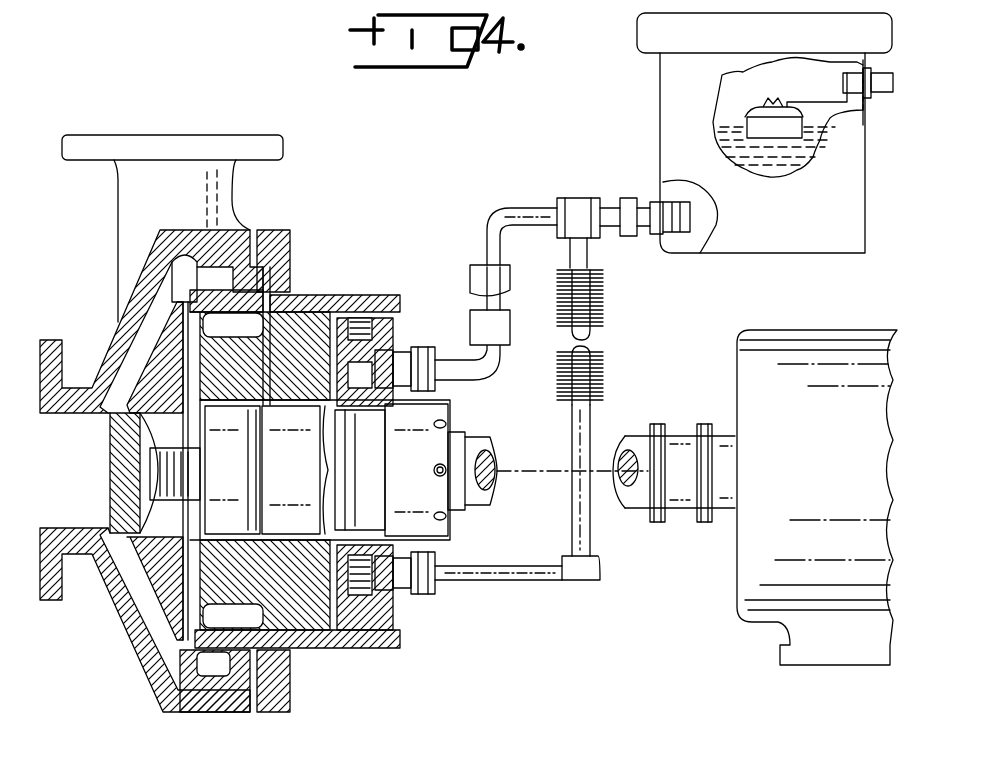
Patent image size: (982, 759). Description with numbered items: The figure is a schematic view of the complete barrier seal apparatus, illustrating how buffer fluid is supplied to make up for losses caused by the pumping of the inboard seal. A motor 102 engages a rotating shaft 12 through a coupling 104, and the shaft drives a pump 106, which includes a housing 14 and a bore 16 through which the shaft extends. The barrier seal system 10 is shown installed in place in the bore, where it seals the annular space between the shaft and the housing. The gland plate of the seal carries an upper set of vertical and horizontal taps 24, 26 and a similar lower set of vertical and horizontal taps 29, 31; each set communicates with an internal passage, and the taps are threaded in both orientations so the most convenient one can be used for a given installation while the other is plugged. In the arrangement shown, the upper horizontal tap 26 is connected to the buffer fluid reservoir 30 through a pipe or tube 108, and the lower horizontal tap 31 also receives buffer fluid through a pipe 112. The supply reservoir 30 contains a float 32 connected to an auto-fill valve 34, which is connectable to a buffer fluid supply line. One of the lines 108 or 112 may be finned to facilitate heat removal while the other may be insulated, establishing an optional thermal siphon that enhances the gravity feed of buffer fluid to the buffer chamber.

The barrier seal system 10 is at (462, 530).
The rotating shaft 12 is at (495, 440).
The housing 14 is at (180, 706).
The bore 16 is at (216, 400).
The upper vertical tap 24 is at (355, 335).
The upper horizontal tap 26 is at (392, 358).
The lower vertical tap 29 is at (355, 632).
The buffer fluid reservoir 30 is at (660, 92).
The lower horizontal tap 31 is at (380, 585).
The float 32 is at (792, 137).
The auto-fill valve 34 is at (872, 98).
The motor 102 is at (737, 600).
The coupling 104 is at (652, 425).
The pump 106 is at (112, 330).
The pipe or tube 108 is at (522, 205).
The pipe 112 is at (528, 578).